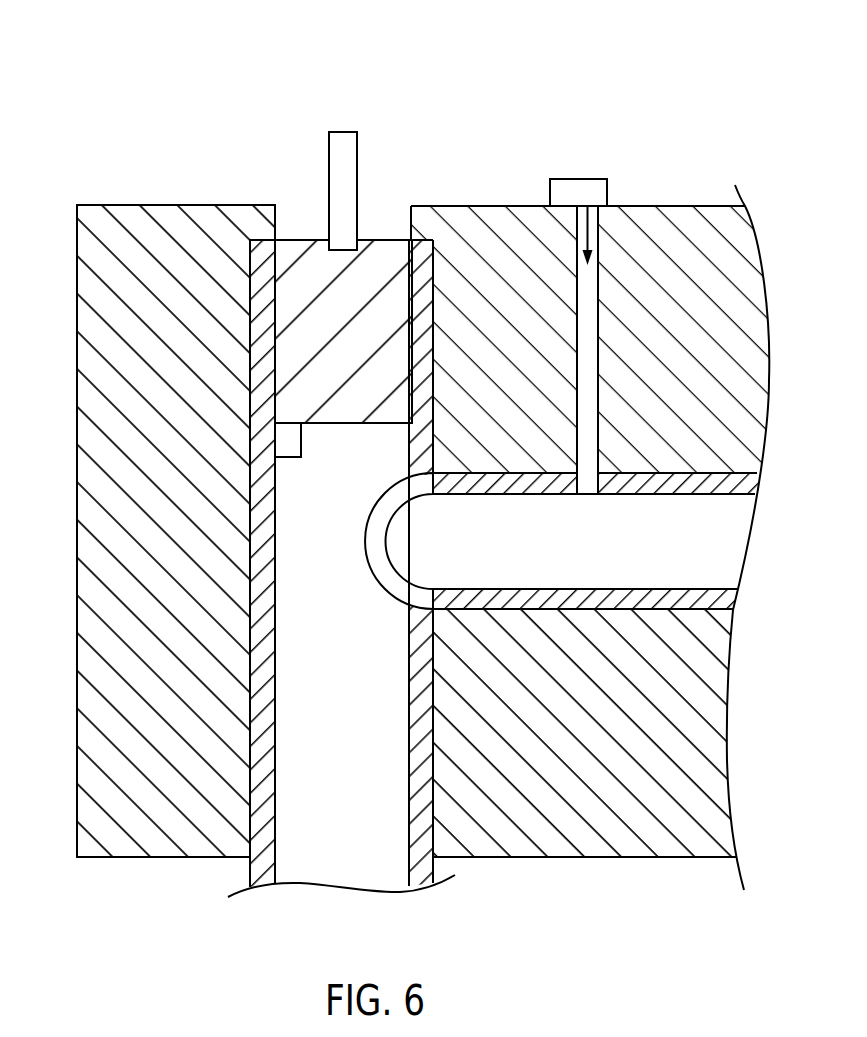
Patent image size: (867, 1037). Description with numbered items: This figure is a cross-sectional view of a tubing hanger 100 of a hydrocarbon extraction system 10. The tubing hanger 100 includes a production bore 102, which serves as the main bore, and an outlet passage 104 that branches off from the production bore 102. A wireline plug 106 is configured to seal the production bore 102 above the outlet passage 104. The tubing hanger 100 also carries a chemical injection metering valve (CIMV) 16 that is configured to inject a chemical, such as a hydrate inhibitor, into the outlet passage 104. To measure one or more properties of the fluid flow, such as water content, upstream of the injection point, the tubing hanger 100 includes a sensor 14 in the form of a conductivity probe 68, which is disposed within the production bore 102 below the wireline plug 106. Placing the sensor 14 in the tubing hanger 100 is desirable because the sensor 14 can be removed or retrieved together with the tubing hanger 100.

The tubing hanger 100 is at (147, 94).
The hydrocarbon extraction system 10 is at (112, 177).
The wireline plug 106 is at (390, 250).
The production bore 102 is at (353, 786).
The outlet passage 104 is at (719, 553).
The chemical injection metering valve (CIMV) 16 is at (580, 178).
The sensor 14 is at (301, 440).
The conductivity probe 68 is at (327, 442).